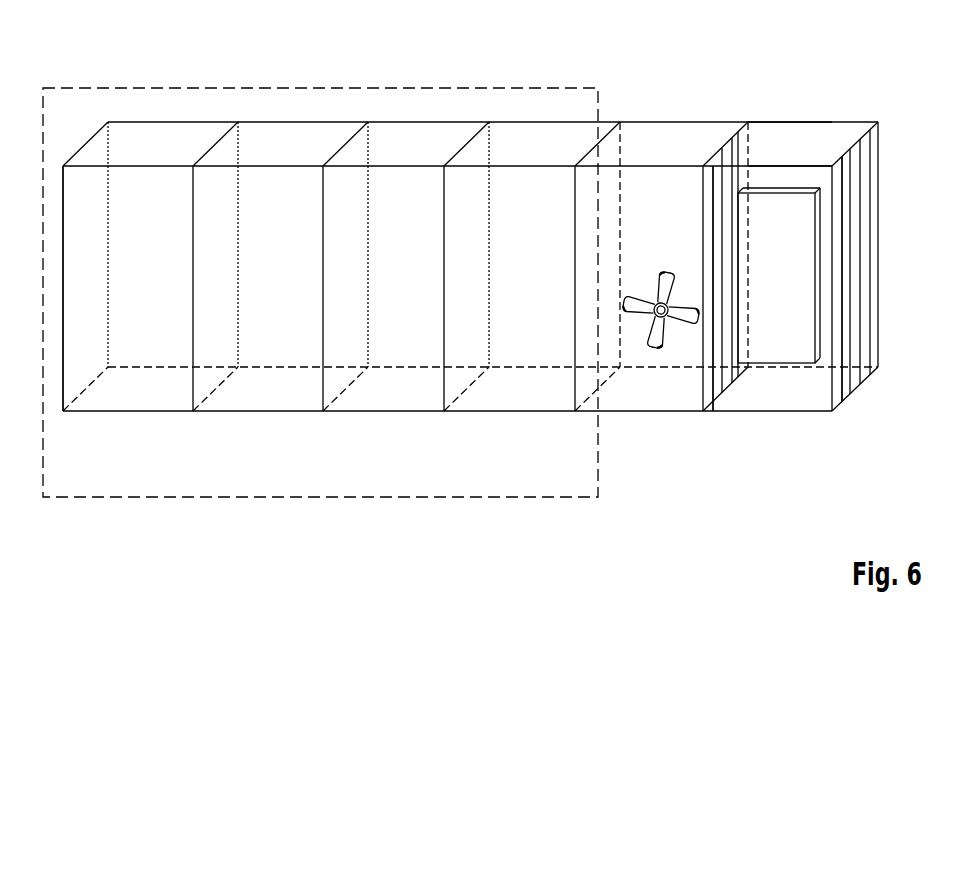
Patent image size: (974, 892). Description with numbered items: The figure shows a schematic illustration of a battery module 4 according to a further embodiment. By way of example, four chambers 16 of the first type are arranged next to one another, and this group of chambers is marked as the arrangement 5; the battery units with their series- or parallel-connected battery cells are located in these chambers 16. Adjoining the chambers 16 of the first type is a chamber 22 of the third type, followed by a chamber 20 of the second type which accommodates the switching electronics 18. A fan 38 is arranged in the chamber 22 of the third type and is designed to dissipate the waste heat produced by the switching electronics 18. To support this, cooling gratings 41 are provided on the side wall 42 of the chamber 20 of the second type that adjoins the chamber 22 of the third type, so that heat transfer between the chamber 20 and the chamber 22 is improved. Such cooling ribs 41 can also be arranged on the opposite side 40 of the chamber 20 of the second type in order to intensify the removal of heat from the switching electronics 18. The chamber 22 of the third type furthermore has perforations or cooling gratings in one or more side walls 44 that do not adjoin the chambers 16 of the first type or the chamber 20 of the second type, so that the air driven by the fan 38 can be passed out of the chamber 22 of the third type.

The battery module 4 is at (551, 55).
The arrangement of the chambers of the first type 5 is at (220, 100).
The chamber of the first type 16 is at (525, 400).
The switching electronics 18 is at (780, 368).
The chamber of the second type 20 is at (795, 140).
The chamber of the third type 22 is at (660, 140).
The fan 38 is at (656, 338).
The opposite side of the chamber of the second type 40 is at (879, 186).
The cooling gratings 41 is at (879, 275).
The side wall of the chamber of the second type 42 is at (723, 150).
The side walls of the chamber of the third type 44 is at (644, 241).